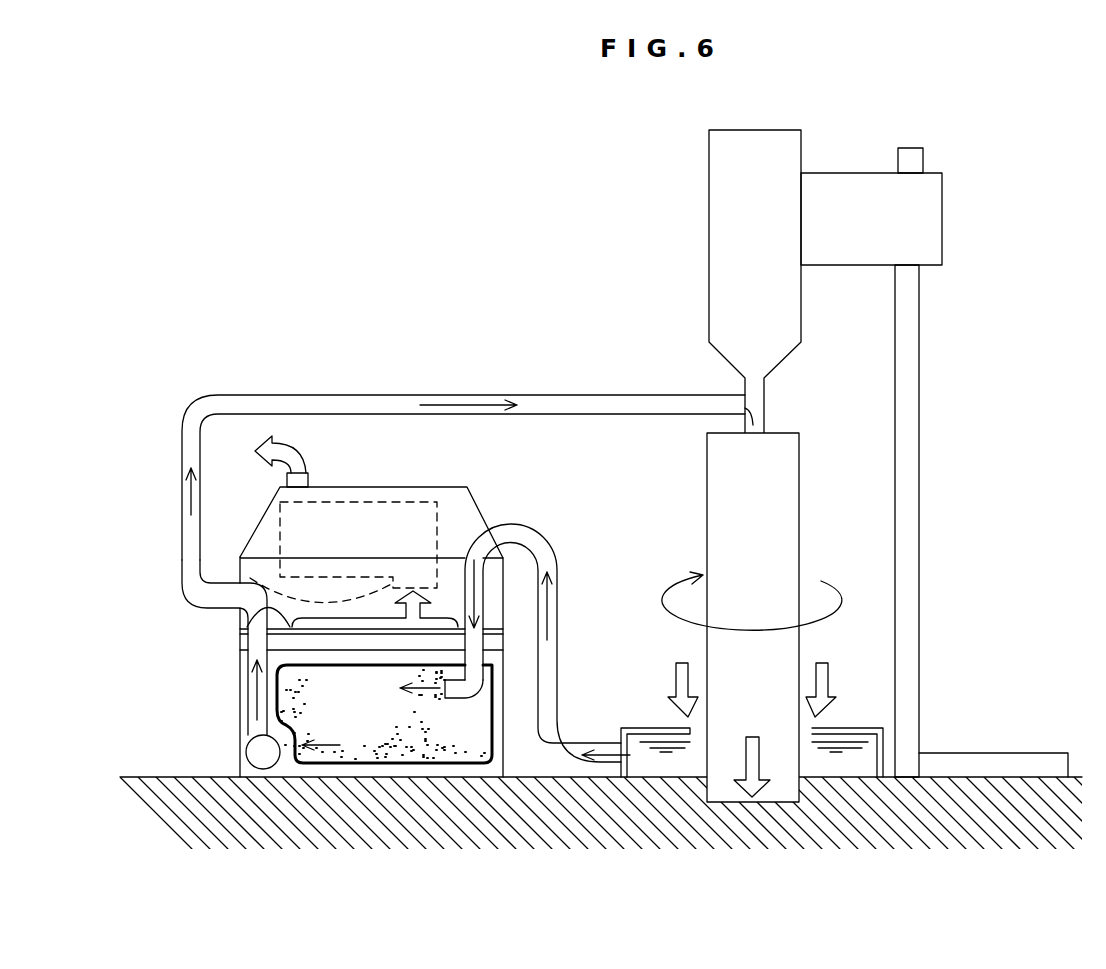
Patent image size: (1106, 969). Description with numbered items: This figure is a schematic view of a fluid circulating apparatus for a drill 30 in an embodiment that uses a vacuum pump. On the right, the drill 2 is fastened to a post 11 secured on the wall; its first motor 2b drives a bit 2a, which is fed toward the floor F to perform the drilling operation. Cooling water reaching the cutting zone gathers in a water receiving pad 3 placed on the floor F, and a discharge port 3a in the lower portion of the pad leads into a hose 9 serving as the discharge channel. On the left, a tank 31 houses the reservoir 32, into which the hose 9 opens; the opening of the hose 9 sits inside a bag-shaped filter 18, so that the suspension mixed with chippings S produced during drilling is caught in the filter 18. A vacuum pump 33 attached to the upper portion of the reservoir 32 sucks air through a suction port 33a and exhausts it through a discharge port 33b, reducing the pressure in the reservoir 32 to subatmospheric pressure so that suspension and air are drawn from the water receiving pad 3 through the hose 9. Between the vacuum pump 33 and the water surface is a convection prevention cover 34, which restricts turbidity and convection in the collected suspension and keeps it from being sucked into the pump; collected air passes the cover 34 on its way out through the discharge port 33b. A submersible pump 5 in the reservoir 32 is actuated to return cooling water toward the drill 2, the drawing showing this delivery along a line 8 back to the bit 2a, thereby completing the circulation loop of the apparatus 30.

The fluid circulating apparatus for a drill 30 is at (461, 174).
The drill 2 is at (1003, 333).
The bit 2a is at (787, 463).
The first motor 2b is at (787, 307).
The post 11 is at (910, 573).
The supply pipe 8 is at (593, 395).
The convection prevention cover 34 is at (243, 612).
The submersible pump 5 is at (246, 750).
The tank 31 is at (492, 489).
The vacuum pump 33 is at (398, 512).
The suction port 33a is at (280, 577).
The discharge port 33b is at (310, 477).
The hose 9 is at (560, 598).
The reservoir 32 is at (507, 695).
The filter 18 is at (493, 740).
The chippings S is at (281, 713).
The discharge port 3a is at (643, 748).
The water receiving pad 3 is at (845, 730).
The floor F is at (152, 776).